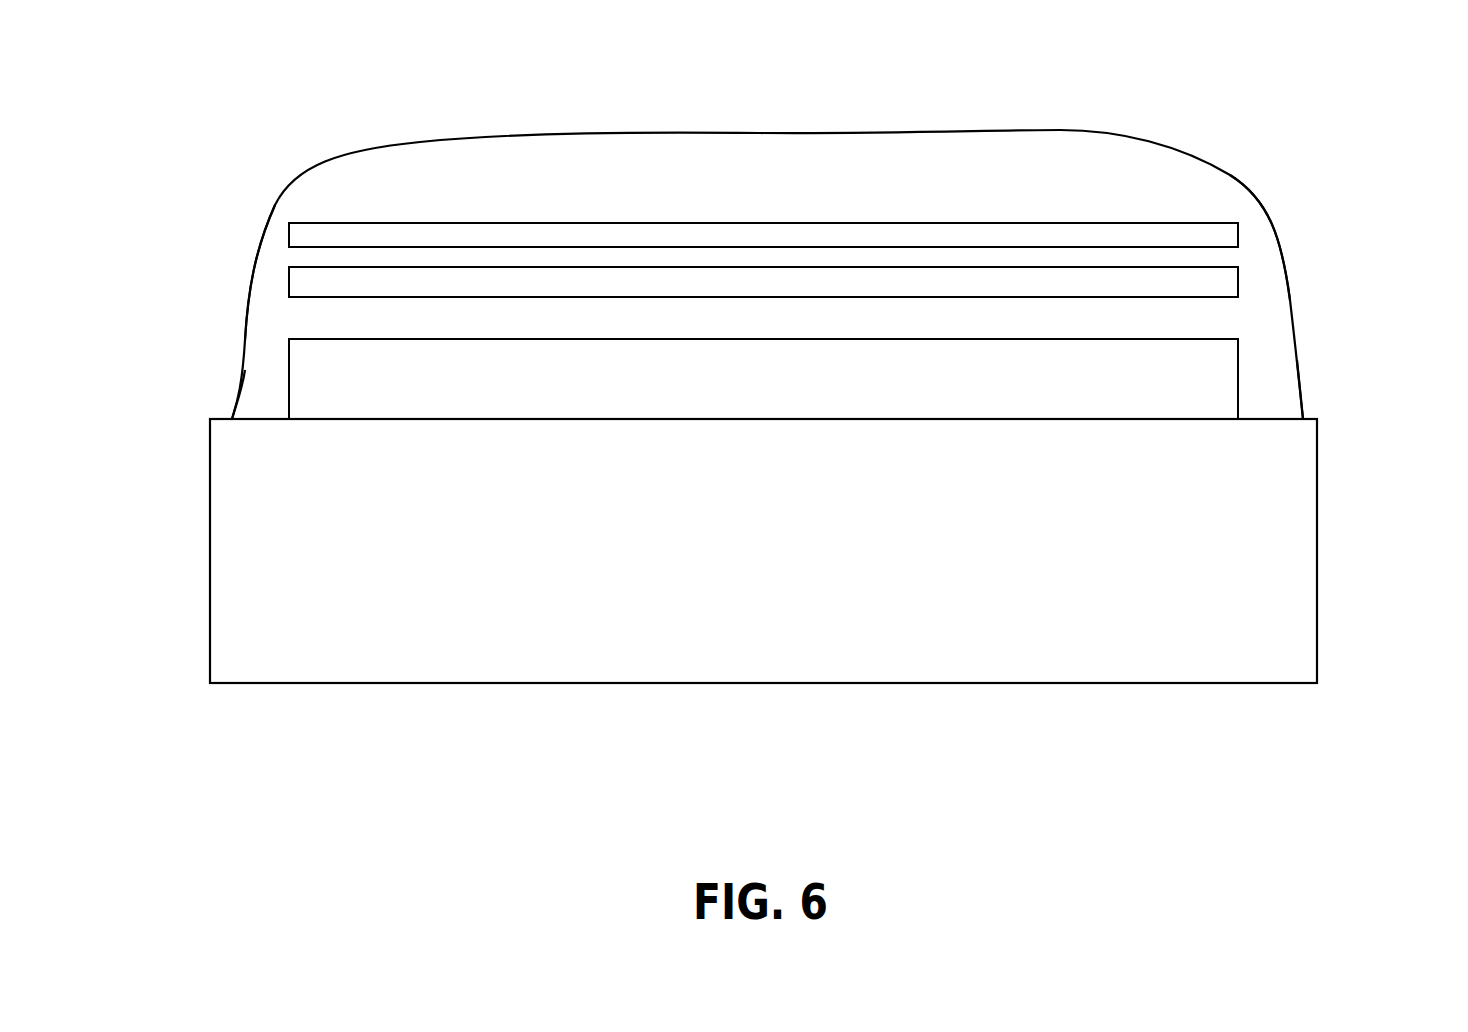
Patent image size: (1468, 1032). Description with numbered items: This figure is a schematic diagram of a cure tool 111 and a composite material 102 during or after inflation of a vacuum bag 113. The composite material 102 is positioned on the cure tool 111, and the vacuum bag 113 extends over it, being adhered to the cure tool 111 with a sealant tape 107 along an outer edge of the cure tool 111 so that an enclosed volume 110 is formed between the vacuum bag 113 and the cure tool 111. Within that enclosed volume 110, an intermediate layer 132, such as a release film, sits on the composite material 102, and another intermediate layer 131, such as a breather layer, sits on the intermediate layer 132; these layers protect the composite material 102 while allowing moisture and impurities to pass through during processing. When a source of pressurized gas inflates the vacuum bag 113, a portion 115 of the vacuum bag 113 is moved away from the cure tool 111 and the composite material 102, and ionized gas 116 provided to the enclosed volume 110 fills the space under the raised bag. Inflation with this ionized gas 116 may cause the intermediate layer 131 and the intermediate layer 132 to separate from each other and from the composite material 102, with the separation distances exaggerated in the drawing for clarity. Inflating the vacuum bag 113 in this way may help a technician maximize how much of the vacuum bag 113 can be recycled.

The composite material 102 is at (778, 391).
The sealant tape 107 is at (225, 413).
The enclosed volume 110 is at (270, 350).
The cure tool 111 is at (778, 577).
The vacuum bag 113 is at (1268, 208).
The portion of the vacuum bag 115 is at (1262, 105).
The ionized gas 116 is at (901, 202).
The intermediate layer 131 is at (1208, 233).
The intermediate layer 132 is at (1172, 278).